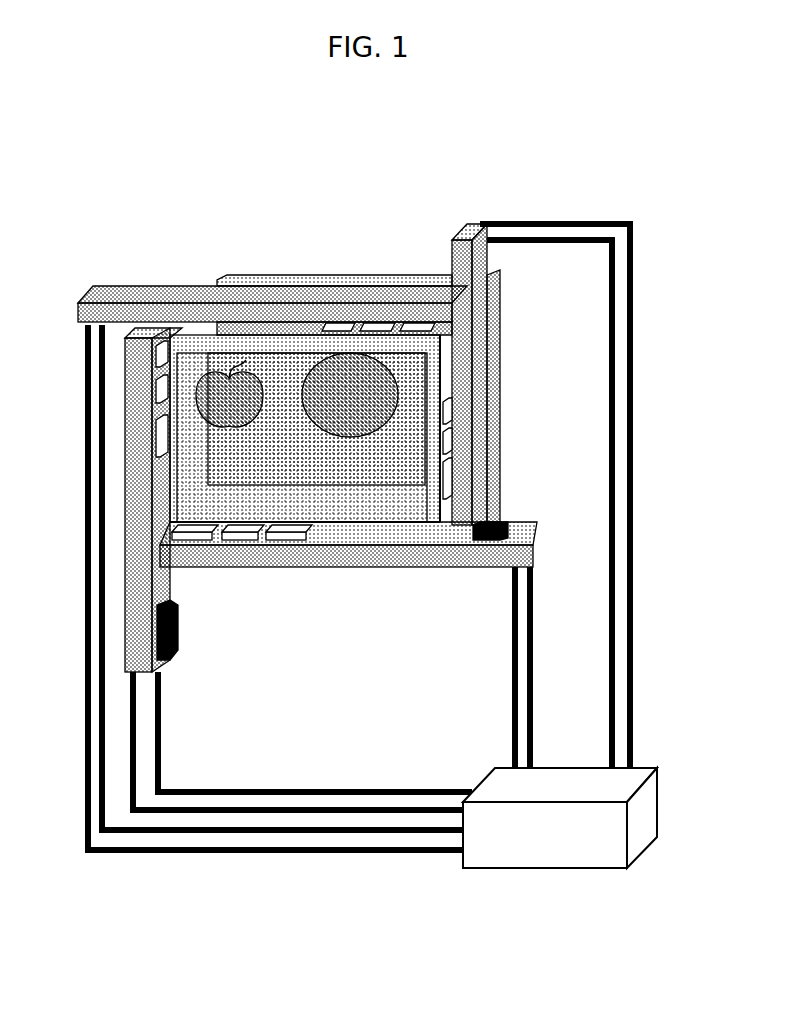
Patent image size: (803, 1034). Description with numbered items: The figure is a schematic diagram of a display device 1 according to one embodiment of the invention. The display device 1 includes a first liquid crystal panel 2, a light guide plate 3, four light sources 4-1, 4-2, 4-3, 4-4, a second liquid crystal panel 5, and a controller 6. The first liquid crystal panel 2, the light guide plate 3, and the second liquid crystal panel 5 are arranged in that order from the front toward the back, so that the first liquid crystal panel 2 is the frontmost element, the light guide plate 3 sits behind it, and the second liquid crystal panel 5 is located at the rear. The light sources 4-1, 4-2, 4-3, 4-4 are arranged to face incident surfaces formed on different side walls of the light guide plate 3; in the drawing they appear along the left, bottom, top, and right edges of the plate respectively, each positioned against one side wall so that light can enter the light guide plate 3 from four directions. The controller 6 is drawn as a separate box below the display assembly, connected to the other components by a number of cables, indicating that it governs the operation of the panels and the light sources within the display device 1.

The display device 1 is at (726, 695).
The first liquid crystal panel 2 is at (433, 510).
The light guide plate 3 is at (190, 330).
The light source 4-1 is at (68, 335).
The light source 4-2 is at (309, 572).
The light source 4-3 is at (318, 268).
The light source 4-4 is at (508, 398).
The second liquid crystal panel 5 is at (258, 275).
The controller 6 is at (647, 802).